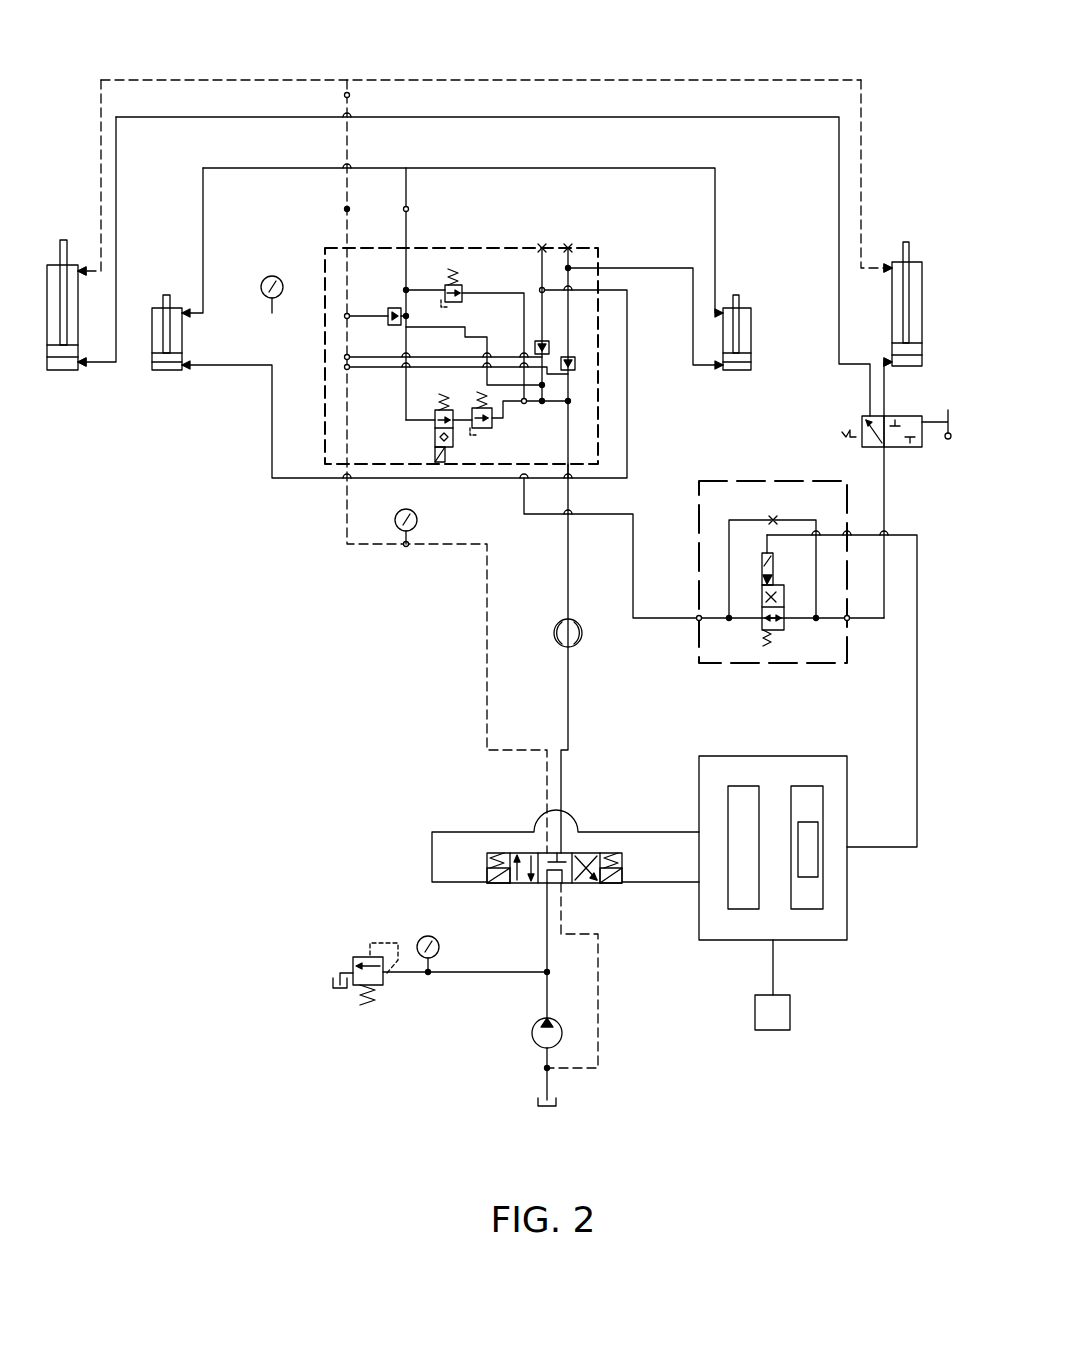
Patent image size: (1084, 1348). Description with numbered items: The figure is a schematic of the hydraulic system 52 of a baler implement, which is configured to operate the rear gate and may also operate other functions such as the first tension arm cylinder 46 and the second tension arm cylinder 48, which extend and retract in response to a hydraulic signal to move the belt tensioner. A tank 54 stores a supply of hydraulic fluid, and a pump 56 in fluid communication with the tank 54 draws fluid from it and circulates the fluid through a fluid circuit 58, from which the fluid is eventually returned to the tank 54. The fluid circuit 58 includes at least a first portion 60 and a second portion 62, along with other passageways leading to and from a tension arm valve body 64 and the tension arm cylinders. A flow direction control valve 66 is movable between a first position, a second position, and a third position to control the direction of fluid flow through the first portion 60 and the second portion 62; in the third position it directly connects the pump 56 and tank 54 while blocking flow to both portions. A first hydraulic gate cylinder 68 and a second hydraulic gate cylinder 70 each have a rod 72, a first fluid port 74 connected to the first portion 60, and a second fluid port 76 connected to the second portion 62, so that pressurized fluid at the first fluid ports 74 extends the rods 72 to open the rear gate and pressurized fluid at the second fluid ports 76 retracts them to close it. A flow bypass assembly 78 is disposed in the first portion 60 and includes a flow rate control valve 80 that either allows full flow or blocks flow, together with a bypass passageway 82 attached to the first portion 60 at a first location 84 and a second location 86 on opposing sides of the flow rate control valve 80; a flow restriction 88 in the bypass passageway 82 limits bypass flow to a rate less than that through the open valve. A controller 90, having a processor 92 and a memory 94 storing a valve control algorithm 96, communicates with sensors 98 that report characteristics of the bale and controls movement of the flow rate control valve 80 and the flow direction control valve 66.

The first tension arm cylinder 46 is at (182, 337).
The second tension arm cylinder 48 is at (751, 337).
The hydraulic system 52 is at (316, 630).
The tank 54 is at (548, 1106).
The pump 56 is at (532, 1033).
The fluid circuit 58 is at (590, 738).
The first portion 60 is at (600, 117).
The second portion 62 is at (226, 80).
The tension arm valve body 64 is at (501, 248).
The flow direction control valve 66 is at (575, 883).
The first hydraulic gate cylinder 68 is at (892, 343).
The second hydraulic gate cylinder 70 is at (64, 370).
The rod 72 is at (64, 240).
The first fluid port 74 is at (78, 362).
The second fluid port 76 is at (78, 271).
The flow bypass assembly 78 is at (748, 663).
The flow rate control valve 80 is at (762, 598).
The bypass passageway 82 is at (802, 520).
The first location 84 is at (816, 618).
The second location 86 is at (729, 618).
The flow restriction 88 is at (773, 516).
The controller 90 is at (810, 940).
The processor 92 is at (728, 893).
The memory 94 is at (815, 786).
The valve control algorithm 96 is at (808, 862).
The sensors 98 is at (780, 1015).